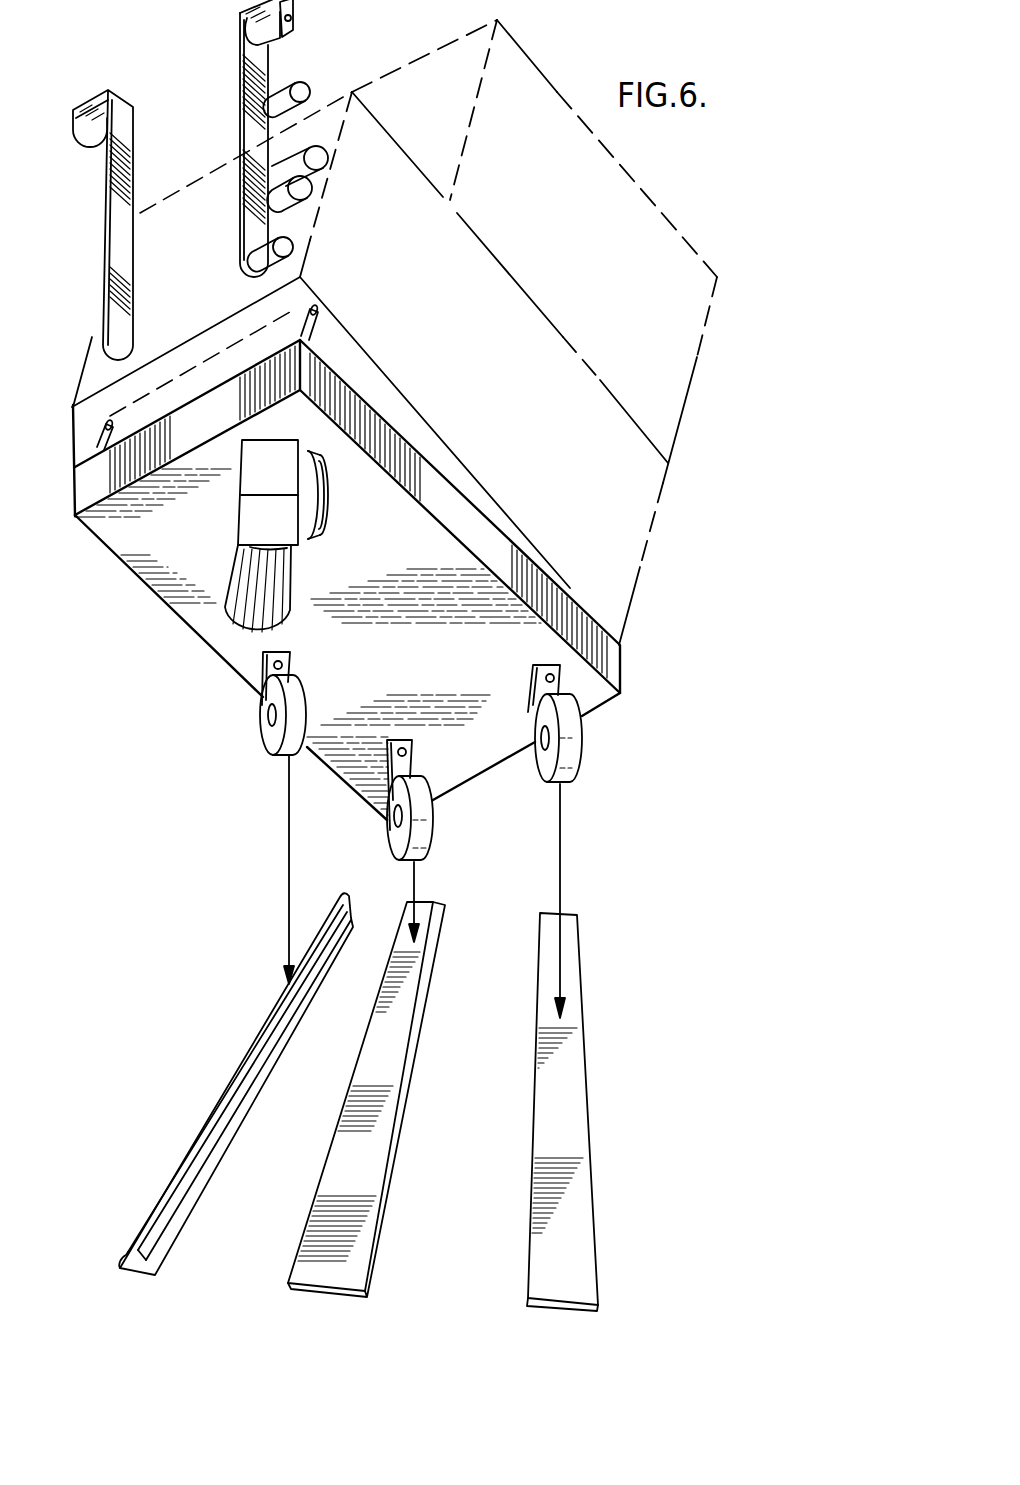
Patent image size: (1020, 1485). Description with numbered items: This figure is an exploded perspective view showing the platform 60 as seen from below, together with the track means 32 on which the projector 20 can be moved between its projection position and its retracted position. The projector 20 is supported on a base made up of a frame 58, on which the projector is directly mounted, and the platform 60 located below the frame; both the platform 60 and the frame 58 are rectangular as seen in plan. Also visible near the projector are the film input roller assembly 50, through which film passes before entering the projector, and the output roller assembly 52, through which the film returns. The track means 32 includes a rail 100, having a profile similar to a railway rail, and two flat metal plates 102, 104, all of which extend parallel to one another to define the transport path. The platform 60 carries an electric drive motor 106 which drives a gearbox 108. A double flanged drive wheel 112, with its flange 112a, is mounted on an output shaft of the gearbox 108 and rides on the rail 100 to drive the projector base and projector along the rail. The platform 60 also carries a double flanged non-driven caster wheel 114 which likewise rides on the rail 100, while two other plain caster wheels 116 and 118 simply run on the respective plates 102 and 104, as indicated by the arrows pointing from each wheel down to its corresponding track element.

The projector 20 is at (658, 373).
The frame 58 is at (654, 539).
The platform 60 is at (611, 672).
The film input roller assembly 50 is at (296, 56).
The output roller assembly 52 is at (150, 157).
The electric drive motor 106 is at (242, 613).
The gearbox 108 is at (250, 522).
The double flanged drive wheel 112 is at (318, 521).
The drive wheel rim 112a is at (326, 478).
The double flanged caster wheel 114 is at (300, 702).
The plain caster wheel 116 is at (437, 808).
The plain caster wheel 118 is at (575, 748).
The rail 100 is at (223, 1083).
The flat metal plate 102 is at (398, 1066).
The flat metal plate 104 is at (568, 1072).
The track means 32 is at (209, 1084).